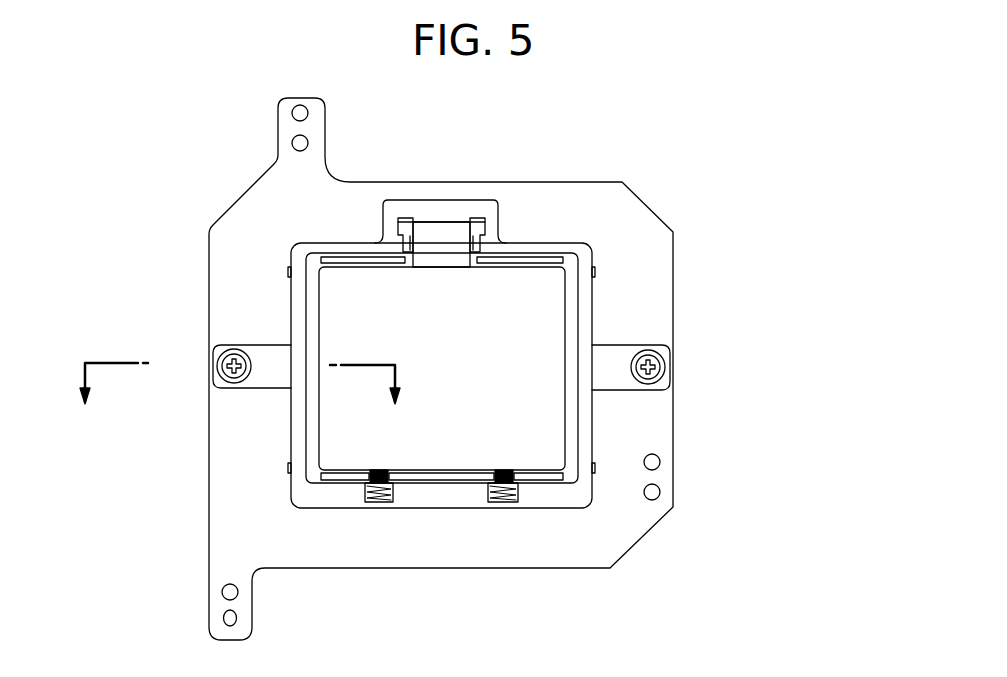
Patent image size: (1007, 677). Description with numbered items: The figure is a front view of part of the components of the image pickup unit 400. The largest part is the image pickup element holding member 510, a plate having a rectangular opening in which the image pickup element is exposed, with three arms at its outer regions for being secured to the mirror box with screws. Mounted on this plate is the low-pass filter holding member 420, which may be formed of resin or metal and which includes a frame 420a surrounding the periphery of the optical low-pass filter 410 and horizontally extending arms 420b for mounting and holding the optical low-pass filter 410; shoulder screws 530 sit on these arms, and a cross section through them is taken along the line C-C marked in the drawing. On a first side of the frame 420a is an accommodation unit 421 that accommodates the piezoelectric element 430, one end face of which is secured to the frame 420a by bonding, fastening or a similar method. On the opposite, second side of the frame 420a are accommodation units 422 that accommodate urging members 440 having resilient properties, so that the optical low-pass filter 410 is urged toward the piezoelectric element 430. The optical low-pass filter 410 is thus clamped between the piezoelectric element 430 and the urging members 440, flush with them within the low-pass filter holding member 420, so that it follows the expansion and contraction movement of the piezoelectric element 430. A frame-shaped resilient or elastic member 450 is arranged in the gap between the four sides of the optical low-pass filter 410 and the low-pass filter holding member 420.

The image pickup unit 400 is at (667, 152).
The optical low-pass filter 410 is at (545, 290).
The low-pass filter holding member 420 is at (118, 413).
The frame 420a is at (300, 430).
The horizontally extending arms 420b is at (258, 377).
The accommodation unit 421 is at (407, 223).
The accommodation units 422 is at (377, 503).
The piezoelectric element 430 is at (458, 232).
The urging members 440 is at (390, 503).
The frame-shaped resilient member 450 is at (570, 438).
The image pickup element holding member 510 is at (245, 233).
The shoulder screws 530 is at (655, 345).